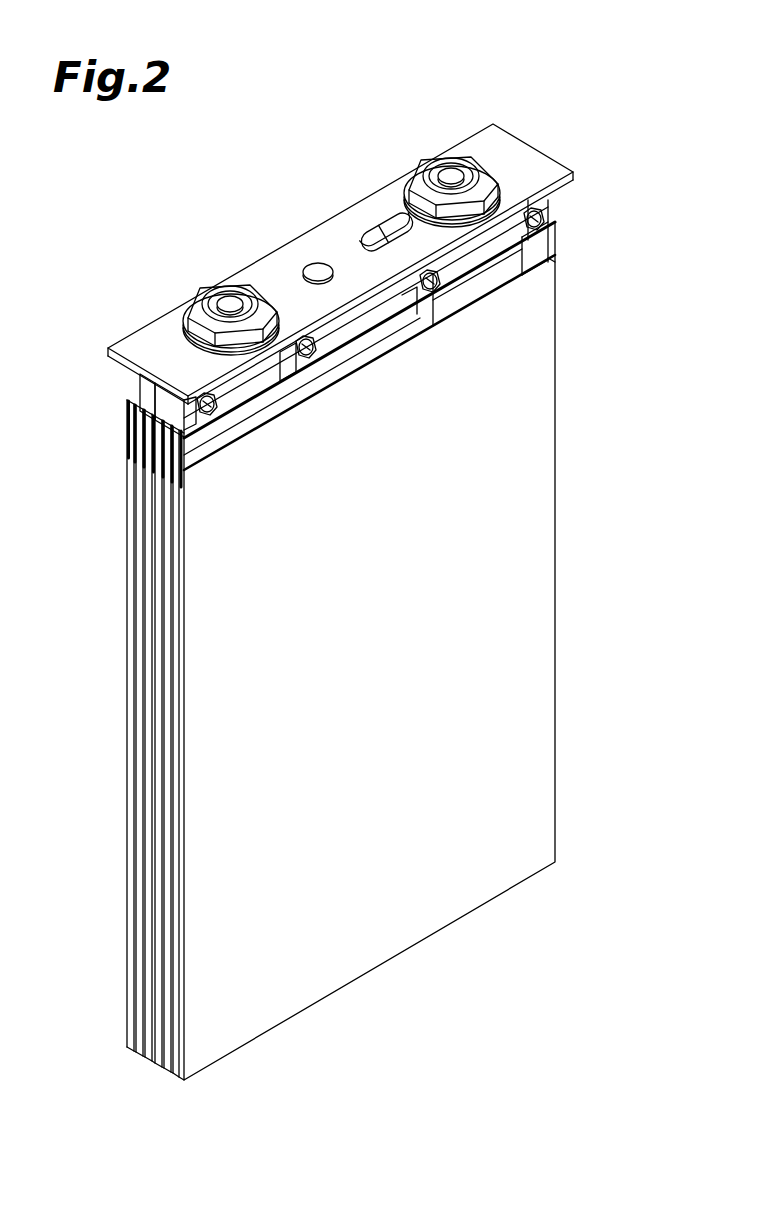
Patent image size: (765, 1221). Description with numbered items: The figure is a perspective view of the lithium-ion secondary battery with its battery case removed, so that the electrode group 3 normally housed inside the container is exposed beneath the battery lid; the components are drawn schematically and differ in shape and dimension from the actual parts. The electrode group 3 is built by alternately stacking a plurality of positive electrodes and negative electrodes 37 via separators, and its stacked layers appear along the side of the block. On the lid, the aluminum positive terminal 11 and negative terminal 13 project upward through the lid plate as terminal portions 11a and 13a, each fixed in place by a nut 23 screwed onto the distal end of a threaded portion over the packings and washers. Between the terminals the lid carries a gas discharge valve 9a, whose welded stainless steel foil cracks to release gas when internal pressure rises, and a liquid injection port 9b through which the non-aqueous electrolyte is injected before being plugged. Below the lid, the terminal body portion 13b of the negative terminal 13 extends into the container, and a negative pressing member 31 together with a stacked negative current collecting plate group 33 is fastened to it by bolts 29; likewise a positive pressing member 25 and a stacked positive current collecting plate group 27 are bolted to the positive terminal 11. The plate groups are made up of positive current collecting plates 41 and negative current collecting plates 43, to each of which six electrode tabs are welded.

The electrode group 3 is at (387, 651).
The gas discharge valve 9a is at (372, 228).
The liquid injection port 9b is at (318, 266).
The positive terminal 11 is at (431, 150).
The terminal portion 11a is at (453, 176).
The negative terminal 13 is at (210, 277).
The terminal portion 13a is at (230, 302).
The terminal body portion 13b is at (150, 394).
The nut 23 is at (335, 214).
The positive pressing member 25 is at (486, 256).
The stacked positive current collecting plate group 27 is at (470, 292).
The bolt 29 is at (548, 213).
The negative pressing member 31 is at (150, 381).
The stacked negative current collecting plate group 33 is at (250, 395).
The negative electrode 37 is at (418, 888).
The positive current collecting plate 41 is at (552, 277).
The negative current collecting plate 43 is at (308, 402).